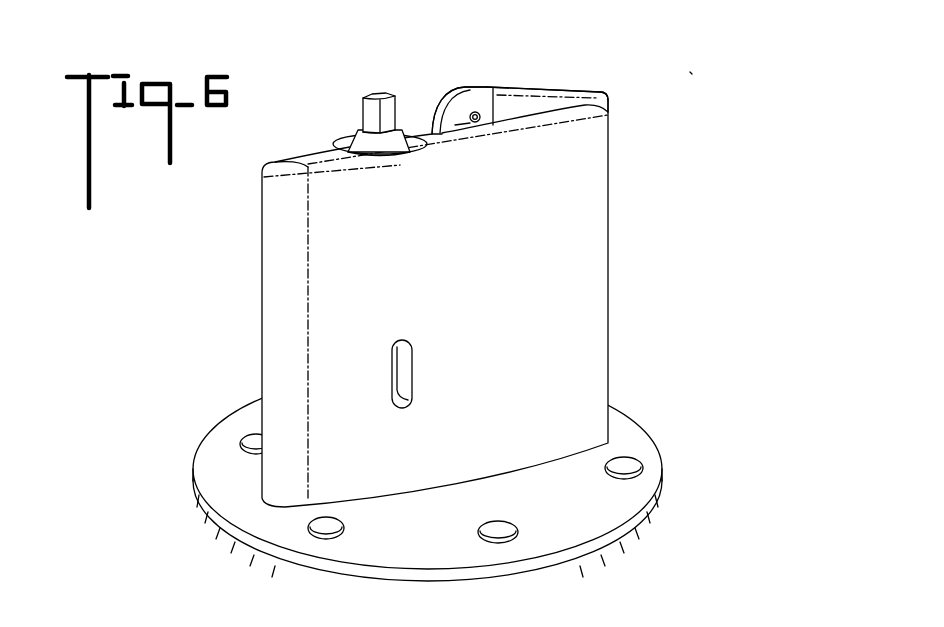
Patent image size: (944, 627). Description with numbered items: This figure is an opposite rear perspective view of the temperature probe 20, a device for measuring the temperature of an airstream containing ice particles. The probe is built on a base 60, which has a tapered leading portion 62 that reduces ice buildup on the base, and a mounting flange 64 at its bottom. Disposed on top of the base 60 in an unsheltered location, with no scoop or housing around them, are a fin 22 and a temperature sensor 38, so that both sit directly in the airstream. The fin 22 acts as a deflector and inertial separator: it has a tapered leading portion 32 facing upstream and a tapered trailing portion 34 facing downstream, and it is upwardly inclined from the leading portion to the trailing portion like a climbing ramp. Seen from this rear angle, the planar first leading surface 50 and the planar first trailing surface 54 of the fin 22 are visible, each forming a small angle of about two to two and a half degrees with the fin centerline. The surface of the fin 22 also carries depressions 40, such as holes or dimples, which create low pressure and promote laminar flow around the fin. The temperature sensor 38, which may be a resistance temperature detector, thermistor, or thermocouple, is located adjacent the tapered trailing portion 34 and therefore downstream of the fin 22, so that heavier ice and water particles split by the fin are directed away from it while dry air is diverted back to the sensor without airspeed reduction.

The temperature probe 20 is at (694, 70).
The fin 22 is at (514, 76).
The tapered leading portion 32 is at (585, 95).
The tapered trailing portion 34 is at (437, 108).
The temperature sensor 38 is at (372, 118).
The depressions 40 is at (475, 111).
The first leading surface 50 is at (537, 104).
The first trailing surface 54 is at (461, 116).
The base 60 is at (478, 297).
The tapered leading portion 62 is at (582, 260).
The mounting flange 64 is at (217, 470).